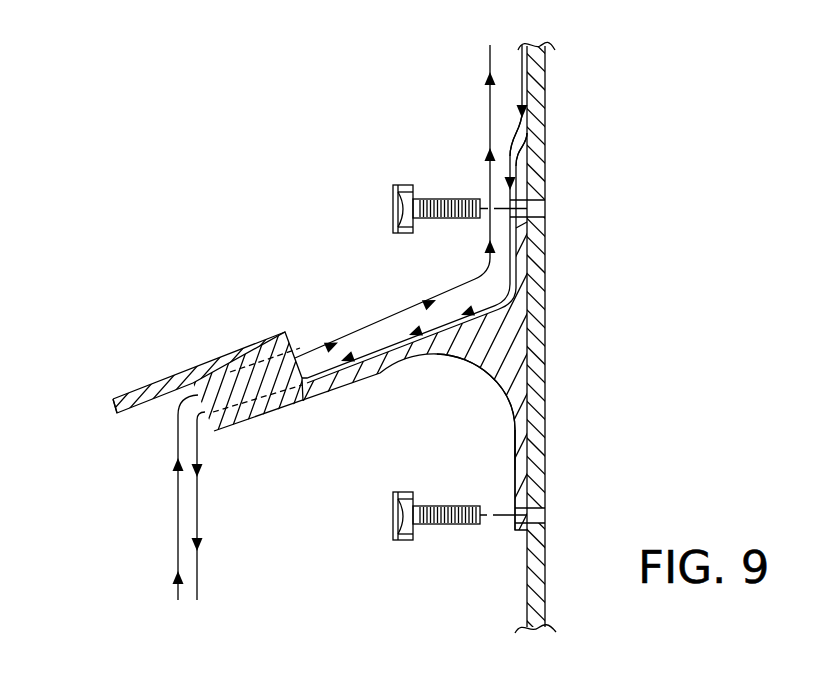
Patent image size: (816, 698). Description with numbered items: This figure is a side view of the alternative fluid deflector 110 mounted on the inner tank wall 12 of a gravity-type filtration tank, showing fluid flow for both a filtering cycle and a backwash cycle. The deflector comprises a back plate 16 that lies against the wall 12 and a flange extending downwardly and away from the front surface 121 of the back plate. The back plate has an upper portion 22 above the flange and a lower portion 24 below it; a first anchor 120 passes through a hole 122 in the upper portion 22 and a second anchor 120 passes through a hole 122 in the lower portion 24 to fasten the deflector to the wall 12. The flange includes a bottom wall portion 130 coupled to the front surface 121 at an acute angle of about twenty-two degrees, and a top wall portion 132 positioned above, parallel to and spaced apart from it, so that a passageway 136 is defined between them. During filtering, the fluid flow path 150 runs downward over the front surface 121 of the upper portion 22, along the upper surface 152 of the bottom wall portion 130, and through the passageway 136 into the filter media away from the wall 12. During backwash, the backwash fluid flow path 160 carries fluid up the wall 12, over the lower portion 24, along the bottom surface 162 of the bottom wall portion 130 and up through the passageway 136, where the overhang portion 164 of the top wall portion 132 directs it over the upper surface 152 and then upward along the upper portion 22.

The inner tank wall 12 is at (543, 317).
The back plate 16 is at (501, 426).
The upper portion 22 is at (523, 163).
The lower portion 24 is at (523, 463).
The fluid deflector 110 is at (256, 203).
The anchor 120 is at (438, 187).
The front surface 121 is at (510, 446).
The hole 122 is at (520, 206).
The bottom wall portion 130 is at (357, 373).
The top wall portion 132 is at (127, 379).
The passageway 136 is at (262, 336).
The fluid flow path 150 is at (524, 78).
The upper surface 152 is at (381, 352).
The backwash fluid flow path 160 is at (178, 512).
The bottom surface 162 is at (273, 413).
The overhang portion 164 is at (128, 414).